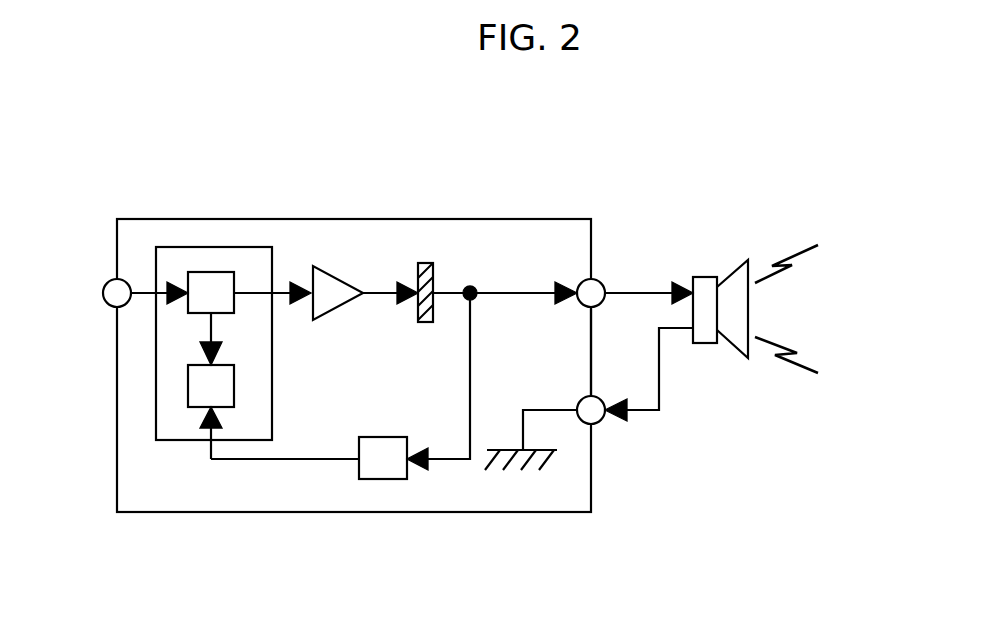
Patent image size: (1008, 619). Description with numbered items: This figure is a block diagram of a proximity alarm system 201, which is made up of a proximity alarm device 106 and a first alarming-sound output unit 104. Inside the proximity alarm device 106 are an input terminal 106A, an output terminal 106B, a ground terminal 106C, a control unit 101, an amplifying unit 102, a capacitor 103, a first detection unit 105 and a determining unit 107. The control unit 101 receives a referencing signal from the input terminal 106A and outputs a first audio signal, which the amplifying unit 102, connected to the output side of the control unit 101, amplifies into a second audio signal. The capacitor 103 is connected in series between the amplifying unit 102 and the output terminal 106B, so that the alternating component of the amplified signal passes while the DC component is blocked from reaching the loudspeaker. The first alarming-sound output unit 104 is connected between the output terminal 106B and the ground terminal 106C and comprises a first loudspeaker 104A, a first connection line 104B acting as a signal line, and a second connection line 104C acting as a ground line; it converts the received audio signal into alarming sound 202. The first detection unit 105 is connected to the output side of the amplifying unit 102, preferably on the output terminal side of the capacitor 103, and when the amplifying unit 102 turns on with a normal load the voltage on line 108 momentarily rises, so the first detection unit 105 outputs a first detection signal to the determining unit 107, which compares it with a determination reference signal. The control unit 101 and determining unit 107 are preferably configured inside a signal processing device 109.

The control unit 101 is at (213, 275).
The amplifying unit 102 is at (333, 275).
The capacitor 103 is at (432, 267).
The first alarming-sound output unit 104 is at (847, 527).
The first loudspeaker 104A is at (737, 333).
The first connection line 104B is at (648, 293).
The second connection line 104C is at (650, 415).
The first detection unit 105 is at (380, 482).
The proximity alarm device 106 is at (531, 219).
The input terminal 106A is at (103, 282).
The output terminal 106B is at (601, 280).
The ground terminal 106C is at (600, 420).
The determining unit 107 is at (233, 405).
The line 108 is at (450, 462).
The signal processing device 109 is at (240, 247).
The proximity alarm system 201 is at (707, 185).
The alarming sound 202 is at (797, 303).